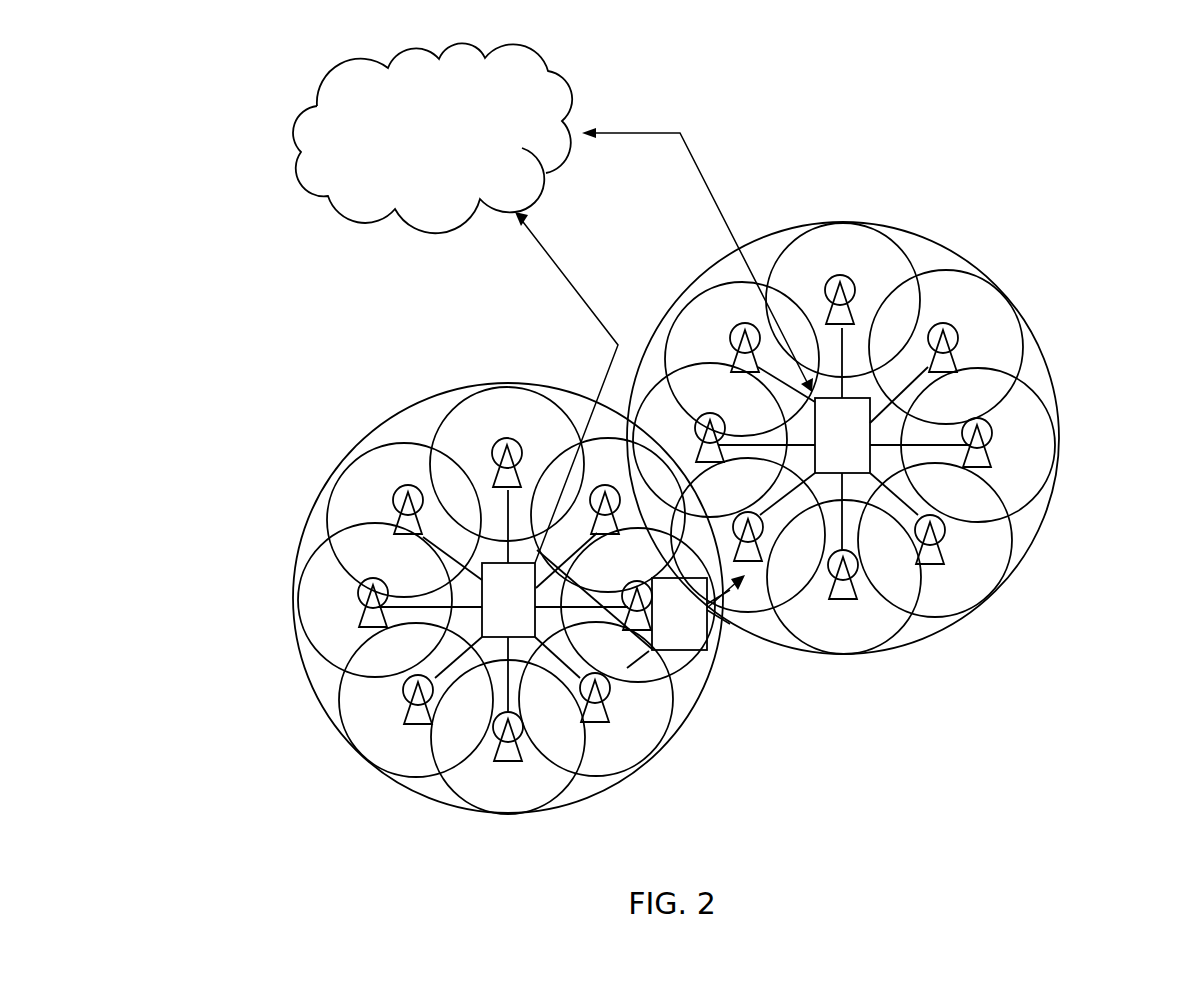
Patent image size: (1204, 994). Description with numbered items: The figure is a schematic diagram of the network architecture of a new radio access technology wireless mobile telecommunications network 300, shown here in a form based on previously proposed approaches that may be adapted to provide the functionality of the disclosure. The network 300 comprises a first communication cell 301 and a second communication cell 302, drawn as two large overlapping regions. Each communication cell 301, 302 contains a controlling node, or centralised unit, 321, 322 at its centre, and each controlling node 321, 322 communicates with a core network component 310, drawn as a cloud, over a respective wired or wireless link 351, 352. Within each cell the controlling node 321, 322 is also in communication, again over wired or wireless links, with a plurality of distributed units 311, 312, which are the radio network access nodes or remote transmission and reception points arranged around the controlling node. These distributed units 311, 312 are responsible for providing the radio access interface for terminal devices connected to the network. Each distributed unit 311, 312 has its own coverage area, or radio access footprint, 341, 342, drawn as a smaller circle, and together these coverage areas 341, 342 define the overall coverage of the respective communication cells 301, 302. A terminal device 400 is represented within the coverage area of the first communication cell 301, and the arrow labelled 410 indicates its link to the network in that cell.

The new RAT wireless mobile telecommunications network 300 is at (841, 99).
The core network component 310 is at (412, 141).
The first communication cell 301 is at (418, 397).
The second communication cell 302 is at (848, 220).
The distributed units 311 is at (400, 700).
The distributed units 312 is at (995, 462).
The controlling node 321 is at (533, 613).
The controlling node 322 is at (867, 449).
The coverage area 341 is at (296, 562).
The coverage area 342 is at (947, 268).
The wired or wireless link 351 is at (574, 280).
The wired or wireless link 352 is at (643, 132).
The terminal device 400 is at (676, 652).
The wireless link 410 is at (748, 584).